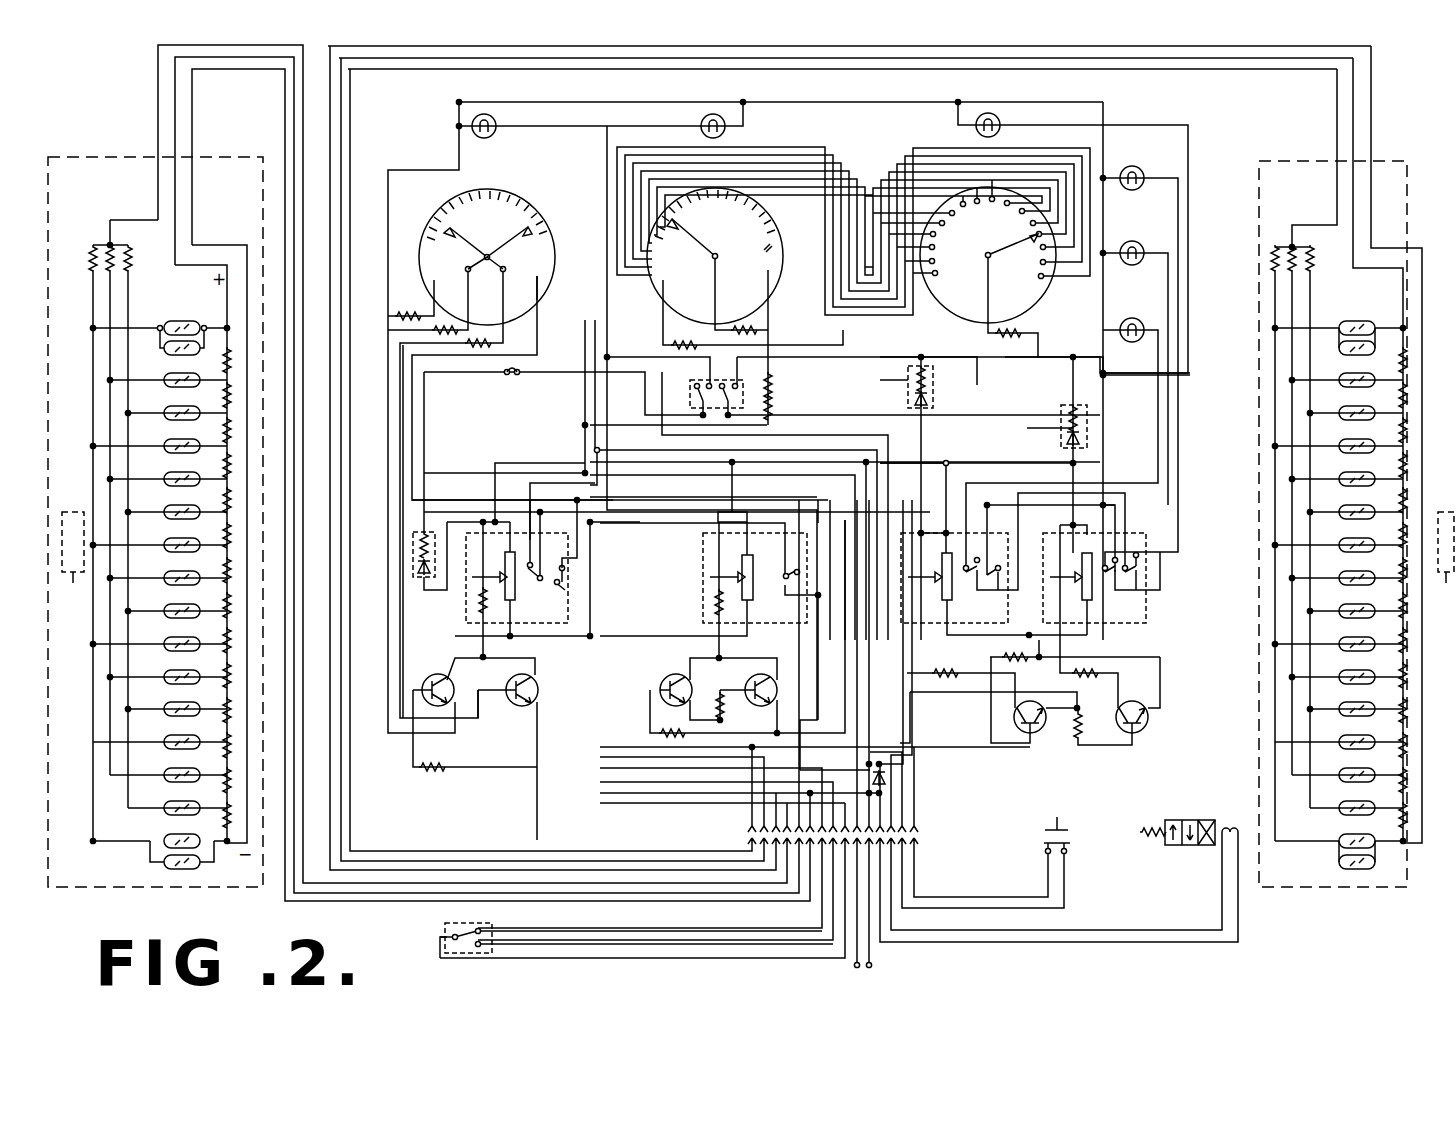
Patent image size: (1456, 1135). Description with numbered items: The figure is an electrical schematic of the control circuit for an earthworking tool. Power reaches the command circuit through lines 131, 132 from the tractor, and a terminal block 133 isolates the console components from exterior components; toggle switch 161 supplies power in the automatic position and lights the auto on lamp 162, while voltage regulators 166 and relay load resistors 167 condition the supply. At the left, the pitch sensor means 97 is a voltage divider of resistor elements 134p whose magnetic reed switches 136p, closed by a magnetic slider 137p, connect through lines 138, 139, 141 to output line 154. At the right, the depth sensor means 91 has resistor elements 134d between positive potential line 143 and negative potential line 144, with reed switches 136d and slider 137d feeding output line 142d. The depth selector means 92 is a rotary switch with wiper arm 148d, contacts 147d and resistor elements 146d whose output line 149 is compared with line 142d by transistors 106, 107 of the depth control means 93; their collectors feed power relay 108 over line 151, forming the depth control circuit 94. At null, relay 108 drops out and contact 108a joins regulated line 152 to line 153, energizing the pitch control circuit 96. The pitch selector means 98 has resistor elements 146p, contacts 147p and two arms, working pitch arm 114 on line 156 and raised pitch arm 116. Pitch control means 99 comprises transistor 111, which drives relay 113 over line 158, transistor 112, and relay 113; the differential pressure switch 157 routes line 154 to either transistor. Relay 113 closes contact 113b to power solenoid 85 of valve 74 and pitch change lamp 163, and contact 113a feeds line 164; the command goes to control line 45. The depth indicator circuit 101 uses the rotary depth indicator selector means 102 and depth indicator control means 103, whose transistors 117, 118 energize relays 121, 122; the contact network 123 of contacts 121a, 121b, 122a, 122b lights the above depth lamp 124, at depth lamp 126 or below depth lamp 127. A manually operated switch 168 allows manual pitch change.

The pitch sensor means 97 is at (100, 147).
The depth sensor means 91 is at (1420, 154).
The output line of pitch sensor 154 is at (158, 196).
The line to pitch control circuit 153 is at (227, 294).
The sensor line 138 is at (93, 353).
The sensor line 139 is at (110, 386).
The sensor line 141 is at (128, 430).
The resistor elements of pitch sensor 134p is at (230, 548).
The magnetic slider of pitch sensor 137p is at (73, 583).
The magnetic reed switches of pitch sensor 136p is at (200, 604).
The resistor elements of depth sensor 134d is at (1410, 368).
The magnetic slider of depth sensor 137d is at (1446, 583).
The magnetic reed switches of depth sensor 136d is at (1362, 618).
The output line of depth sensor 142d is at (1330, 222).
The positive potential line 143 is at (1403, 290).
The negative potential line 144 is at (1412, 850).
The pitch selector means 98 is at (440, 198).
The resistor elements of pitch selector 146p is at (505, 210).
The taps and contacts of pitch selector 147p is at (535, 222).
The working pitch selector arm 114 is at (478, 247).
The raised pitch selector arm 116 is at (496, 250).
The line to working pitch selector arm 156 is at (508, 300).
The pitch change indicating lamp 163 is at (492, 135).
The auto on lamp 162 is at (730, 130).
The depth selector means 92 is at (658, 308).
The contacts of depth selector 147d is at (690, 208).
The wiper arm of depth selector 148d is at (695, 248).
The resistor elements of depth selector 146d is at (758, 258).
The output line of depth selector 149 is at (718, 302).
The depth indicator selector means 102 is at (1034, 314).
The above depth lamp 124 is at (1132, 192).
The at depth lamp 126 is at (1132, 267).
The below depth lamp 127 is at (1132, 342).
The toggle switch 161 is at (701, 399).
The voltage regulators 166 is at (422, 580).
The relay 121 is at (920, 575).
The relay contact 121a is at (1038, 552).
The normally closed relay contact 121b is at (1041, 564).
The relay 122 is at (1093, 604).
The normally closed relay contact 122a is at (1128, 581).
The relay contact 122b is at (1129, 589).
The relay control contact network 123 is at (1164, 610).
The regulated positive voltage line 152 is at (798, 524).
The line from relay 113 contact 164 is at (580, 552).
The power relay 108 is at (710, 576).
The relay contact 108a is at (710, 610).
The relay load resistors 167 is at (478, 610).
The collector line 151 is at (738, 656).
The power relay 113 is at (470, 582).
The relay contact 113a is at (559, 593).
The relay contact 113b is at (539, 552).
The transistor 112 is at (446, 672).
The collector line 158 is at (510, 658).
The transistor 111 is at (537, 678).
The transistor 106 is at (668, 672).
The transistor 107 is at (778, 678).
The pitch control means 99 is at (403, 757).
The pitch control circuit 96 is at (521, 796).
The depth control circuit 94 is at (668, 800).
The depth control means 93 is at (646, 740).
The terminal block 133 is at (943, 835).
The manually operated switch 168 is at (1070, 826).
The electrically controlled valve 74 is at (1190, 820).
The solenoid 85 is at (1232, 826).
The control line 45 is at (1152, 940).
The differential pressure switch 157 is at (450, 922).
The power supply line 131 is at (850, 962).
The power supply line 132 is at (878, 958).
The depth indicator control means 103 is at (997, 750).
The transistor 117 is at (1043, 740).
The transistor 118 is at (1150, 724).
The depth indicator circuit 101 is at (1146, 756).